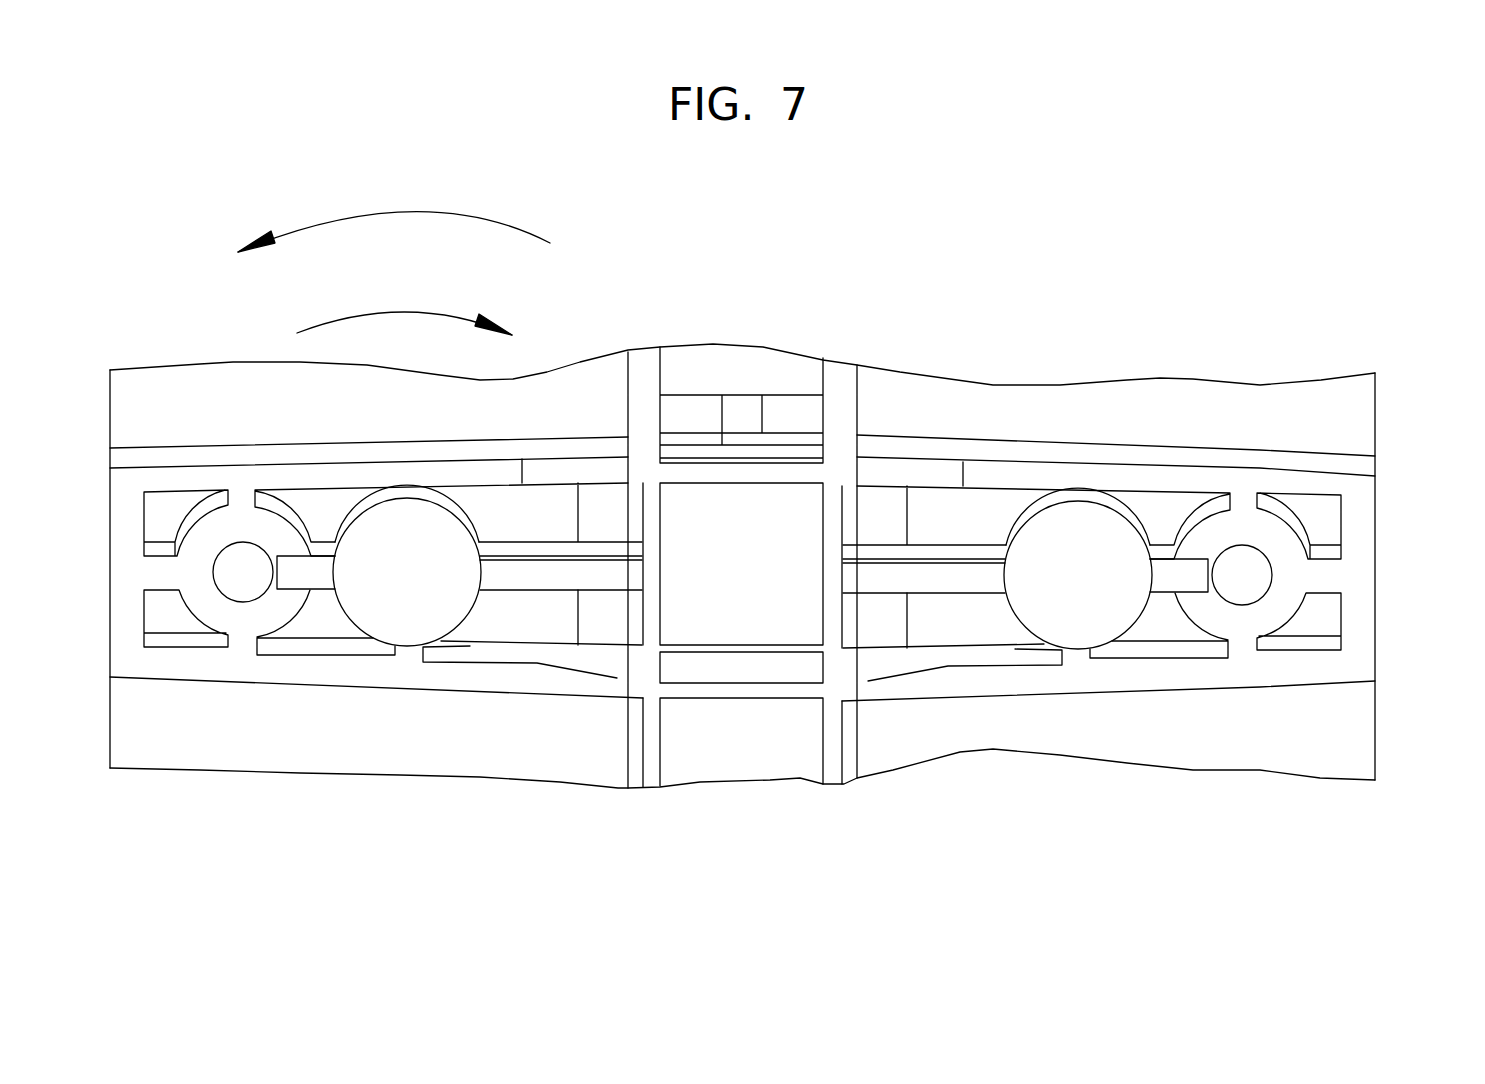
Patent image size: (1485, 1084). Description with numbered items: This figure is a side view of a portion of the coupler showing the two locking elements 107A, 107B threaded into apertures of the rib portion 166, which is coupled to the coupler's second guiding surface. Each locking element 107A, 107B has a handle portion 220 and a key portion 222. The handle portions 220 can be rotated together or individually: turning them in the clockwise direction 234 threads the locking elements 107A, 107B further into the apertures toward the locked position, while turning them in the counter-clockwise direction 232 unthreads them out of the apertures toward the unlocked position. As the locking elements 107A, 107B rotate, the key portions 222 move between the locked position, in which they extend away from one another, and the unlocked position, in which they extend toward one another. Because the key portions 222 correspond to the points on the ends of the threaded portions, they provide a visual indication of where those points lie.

The rib portion 166 is at (1352, 512).
The handle portion 220 is at (1075, 510).
The key portion 222 is at (1180, 703).
The locking element 107A is at (1062, 600).
The locking element 107B is at (418, 612).
The direction 232 is at (450, 215).
The direction 234 is at (372, 313).